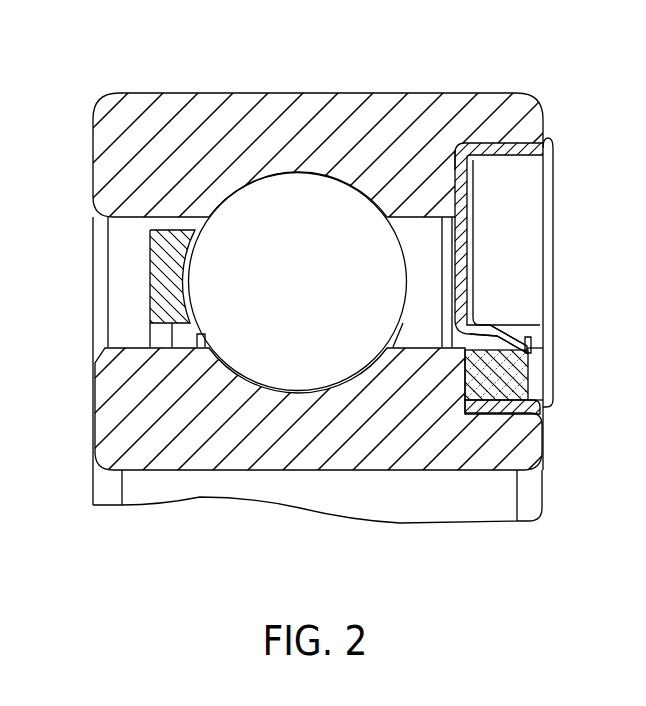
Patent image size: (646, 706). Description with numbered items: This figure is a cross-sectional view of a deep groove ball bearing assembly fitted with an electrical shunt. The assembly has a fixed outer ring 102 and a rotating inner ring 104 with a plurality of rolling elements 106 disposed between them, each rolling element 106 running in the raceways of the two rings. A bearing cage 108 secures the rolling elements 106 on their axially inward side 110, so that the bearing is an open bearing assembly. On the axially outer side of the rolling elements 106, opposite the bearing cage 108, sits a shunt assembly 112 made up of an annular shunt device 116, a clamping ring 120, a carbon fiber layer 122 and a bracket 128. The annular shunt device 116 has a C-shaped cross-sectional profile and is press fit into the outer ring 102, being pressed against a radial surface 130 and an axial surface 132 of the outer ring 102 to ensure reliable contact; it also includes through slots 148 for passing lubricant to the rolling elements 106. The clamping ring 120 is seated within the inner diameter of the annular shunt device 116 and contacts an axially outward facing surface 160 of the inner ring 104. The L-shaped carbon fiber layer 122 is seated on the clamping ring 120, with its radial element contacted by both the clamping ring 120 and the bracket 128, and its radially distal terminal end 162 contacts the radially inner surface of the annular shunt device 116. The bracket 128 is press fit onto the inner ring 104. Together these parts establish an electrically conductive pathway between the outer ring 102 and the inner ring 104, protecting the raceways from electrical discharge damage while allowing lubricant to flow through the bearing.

The outer ring 102 is at (178, 105).
The inner ring 104 is at (178, 452).
The rolling elements 106 is at (311, 296).
The bearing cage 108 is at (165, 300).
The axially inward side 110 is at (172, 263).
The shunt assembly 112 is at (323, 353).
The annular shunt device 116 is at (520, 158).
The clamping ring 120 is at (358, 353).
The carbon fiber layer 122 is at (548, 356).
The bracket 128 is at (540, 378).
The radial surface 130 is at (520, 140).
The axial surface 132 is at (450, 170).
The through slots 148 is at (457, 273).
The axially outward facing surface 160 is at (465, 402).
The terminal end 162 is at (540, 338).